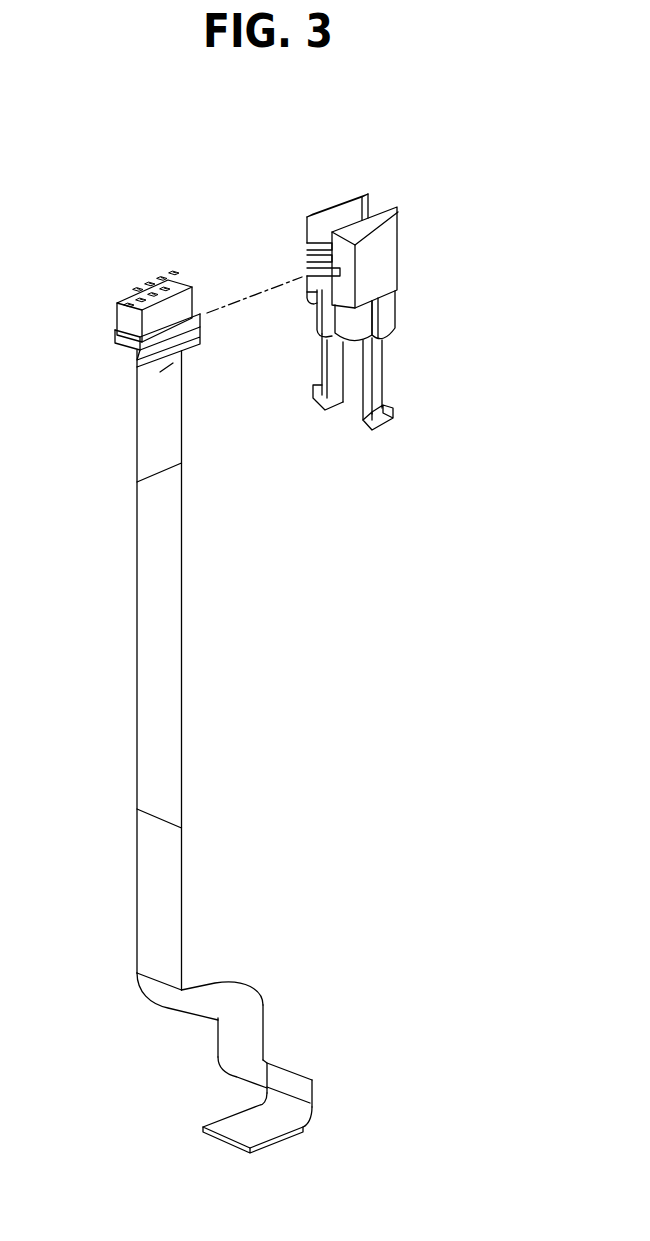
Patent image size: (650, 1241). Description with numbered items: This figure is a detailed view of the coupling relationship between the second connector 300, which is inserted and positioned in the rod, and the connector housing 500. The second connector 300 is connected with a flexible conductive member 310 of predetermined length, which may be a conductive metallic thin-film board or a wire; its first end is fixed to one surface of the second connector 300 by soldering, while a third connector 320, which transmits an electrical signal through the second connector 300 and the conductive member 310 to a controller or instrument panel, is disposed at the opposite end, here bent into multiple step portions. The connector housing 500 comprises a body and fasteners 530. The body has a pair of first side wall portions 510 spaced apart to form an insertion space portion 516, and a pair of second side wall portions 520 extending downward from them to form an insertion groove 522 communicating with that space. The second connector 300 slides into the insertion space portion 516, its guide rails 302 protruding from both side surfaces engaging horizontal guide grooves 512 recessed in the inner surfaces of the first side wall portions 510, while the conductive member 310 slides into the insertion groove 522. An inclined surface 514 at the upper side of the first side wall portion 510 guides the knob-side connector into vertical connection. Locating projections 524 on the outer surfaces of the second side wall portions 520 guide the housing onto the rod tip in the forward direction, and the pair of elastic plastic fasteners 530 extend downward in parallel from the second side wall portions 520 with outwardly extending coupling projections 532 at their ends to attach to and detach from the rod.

The second connector 300 is at (120, 317).
The guide rails 302 is at (126, 347).
The conductive member 310 is at (148, 633).
The third connector 320 is at (272, 1132).
The connector housing 500 is at (403, 247).
The first side wall portions 510 is at (393, 268).
The guide grooves 512 is at (320, 256).
The inclined surface 514 is at (393, 218).
The insertion space portion 516 is at (322, 267).
The second side wall portions 520 is at (353, 328).
The insertion groove 522 is at (332, 314).
The locating projections 524 is at (391, 312).
The fasteners 530 is at (379, 370).
The coupling projections 532 is at (387, 423).